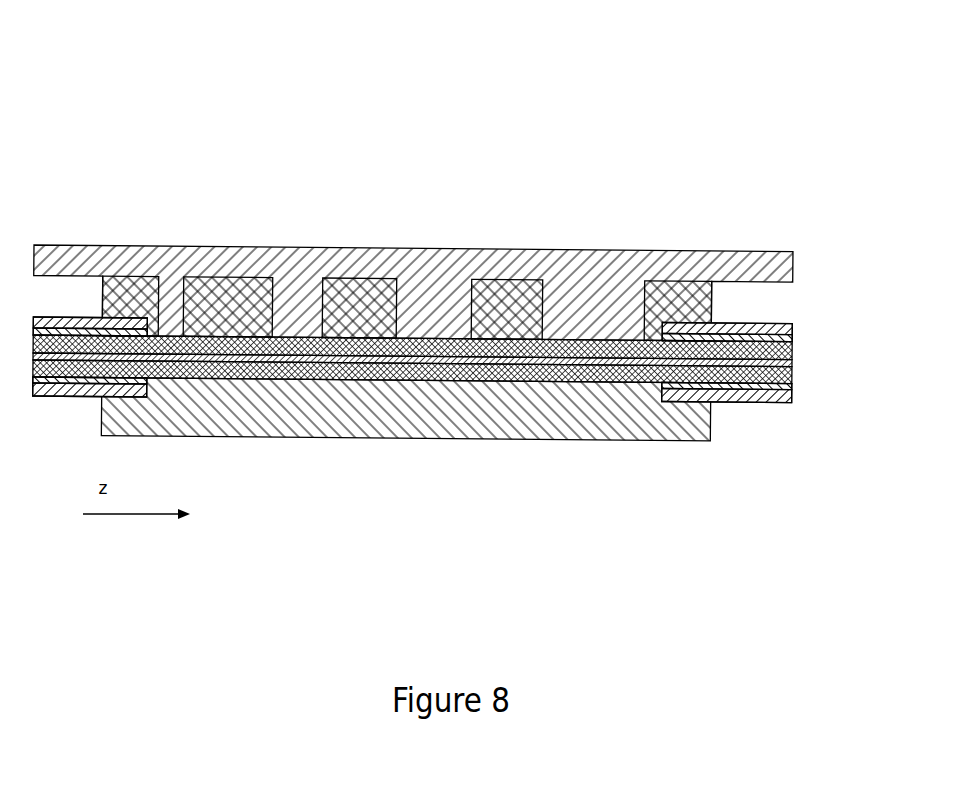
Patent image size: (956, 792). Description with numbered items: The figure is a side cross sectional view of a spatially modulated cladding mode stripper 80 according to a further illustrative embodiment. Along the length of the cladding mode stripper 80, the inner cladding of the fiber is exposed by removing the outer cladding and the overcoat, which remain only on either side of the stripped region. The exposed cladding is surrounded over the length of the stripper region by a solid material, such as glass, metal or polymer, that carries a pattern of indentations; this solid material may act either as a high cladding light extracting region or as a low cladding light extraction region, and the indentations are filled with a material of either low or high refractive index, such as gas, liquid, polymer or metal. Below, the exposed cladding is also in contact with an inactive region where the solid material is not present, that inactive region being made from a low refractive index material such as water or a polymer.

The spatially modulated cladding mode stripper 80 is at (185, 136).